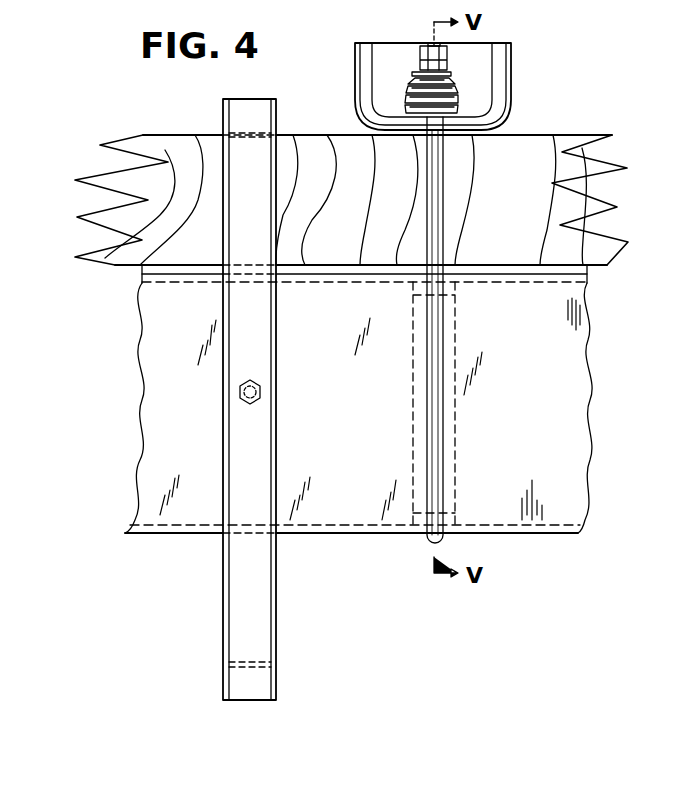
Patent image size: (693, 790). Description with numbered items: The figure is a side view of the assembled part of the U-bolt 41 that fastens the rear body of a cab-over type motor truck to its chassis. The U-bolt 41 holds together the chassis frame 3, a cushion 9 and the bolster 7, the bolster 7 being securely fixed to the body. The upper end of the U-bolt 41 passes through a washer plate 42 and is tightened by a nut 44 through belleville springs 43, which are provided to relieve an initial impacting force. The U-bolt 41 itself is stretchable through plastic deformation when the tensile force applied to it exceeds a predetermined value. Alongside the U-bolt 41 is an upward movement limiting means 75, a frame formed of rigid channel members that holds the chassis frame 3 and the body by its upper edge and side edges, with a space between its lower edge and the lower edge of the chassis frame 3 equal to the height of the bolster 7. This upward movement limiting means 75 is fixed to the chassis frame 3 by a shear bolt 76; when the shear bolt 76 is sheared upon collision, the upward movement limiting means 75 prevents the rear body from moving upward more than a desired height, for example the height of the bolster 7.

The chassis frame 3 is at (562, 428).
The bolster 7 is at (572, 200).
The cushion 9 is at (588, 270).
The U-bolt 41 is at (443, 200).
The washer plate 42 is at (512, 72).
The belleville springs 43 is at (458, 100).
The nut 44 is at (419, 55).
The upward movement limiting means 75 is at (277, 330).
The shear bolt 76 is at (261, 391).